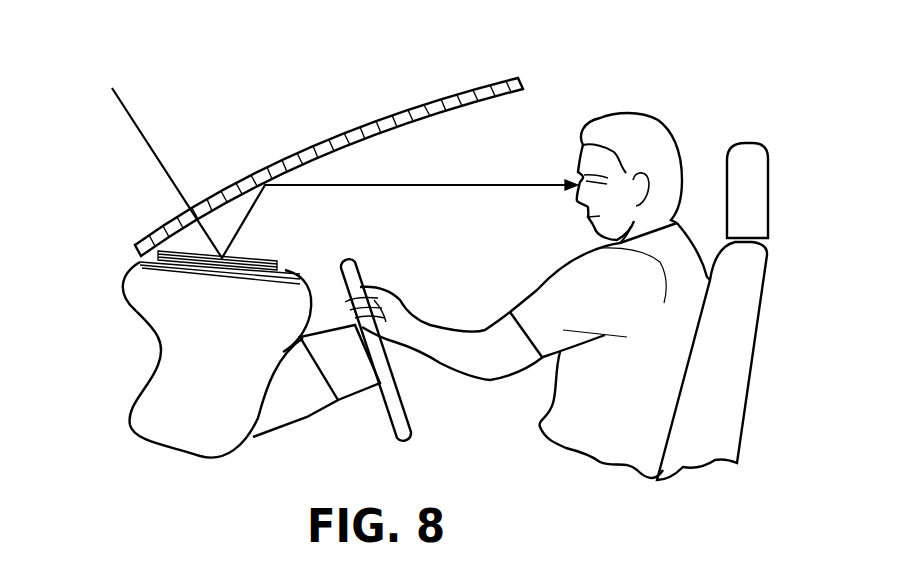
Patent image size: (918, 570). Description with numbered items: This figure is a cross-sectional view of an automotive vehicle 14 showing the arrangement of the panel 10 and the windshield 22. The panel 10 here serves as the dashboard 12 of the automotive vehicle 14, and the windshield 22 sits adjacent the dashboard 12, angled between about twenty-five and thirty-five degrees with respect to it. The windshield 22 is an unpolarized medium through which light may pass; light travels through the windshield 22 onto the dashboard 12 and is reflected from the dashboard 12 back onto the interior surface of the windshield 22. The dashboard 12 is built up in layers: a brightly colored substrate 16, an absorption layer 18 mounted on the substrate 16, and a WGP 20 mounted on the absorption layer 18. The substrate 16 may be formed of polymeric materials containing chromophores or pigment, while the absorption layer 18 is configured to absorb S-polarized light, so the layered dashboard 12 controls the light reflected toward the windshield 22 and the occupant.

The panel 10 is at (332, 321).
The dashboard 12 is at (319, 265).
The automotive vehicle 14 is at (714, 90).
The substrate 16 is at (212, 271).
The absorption layer 18 is at (185, 266).
The WGP 20 is at (127, 257).
The windshield 22 is at (422, 102).